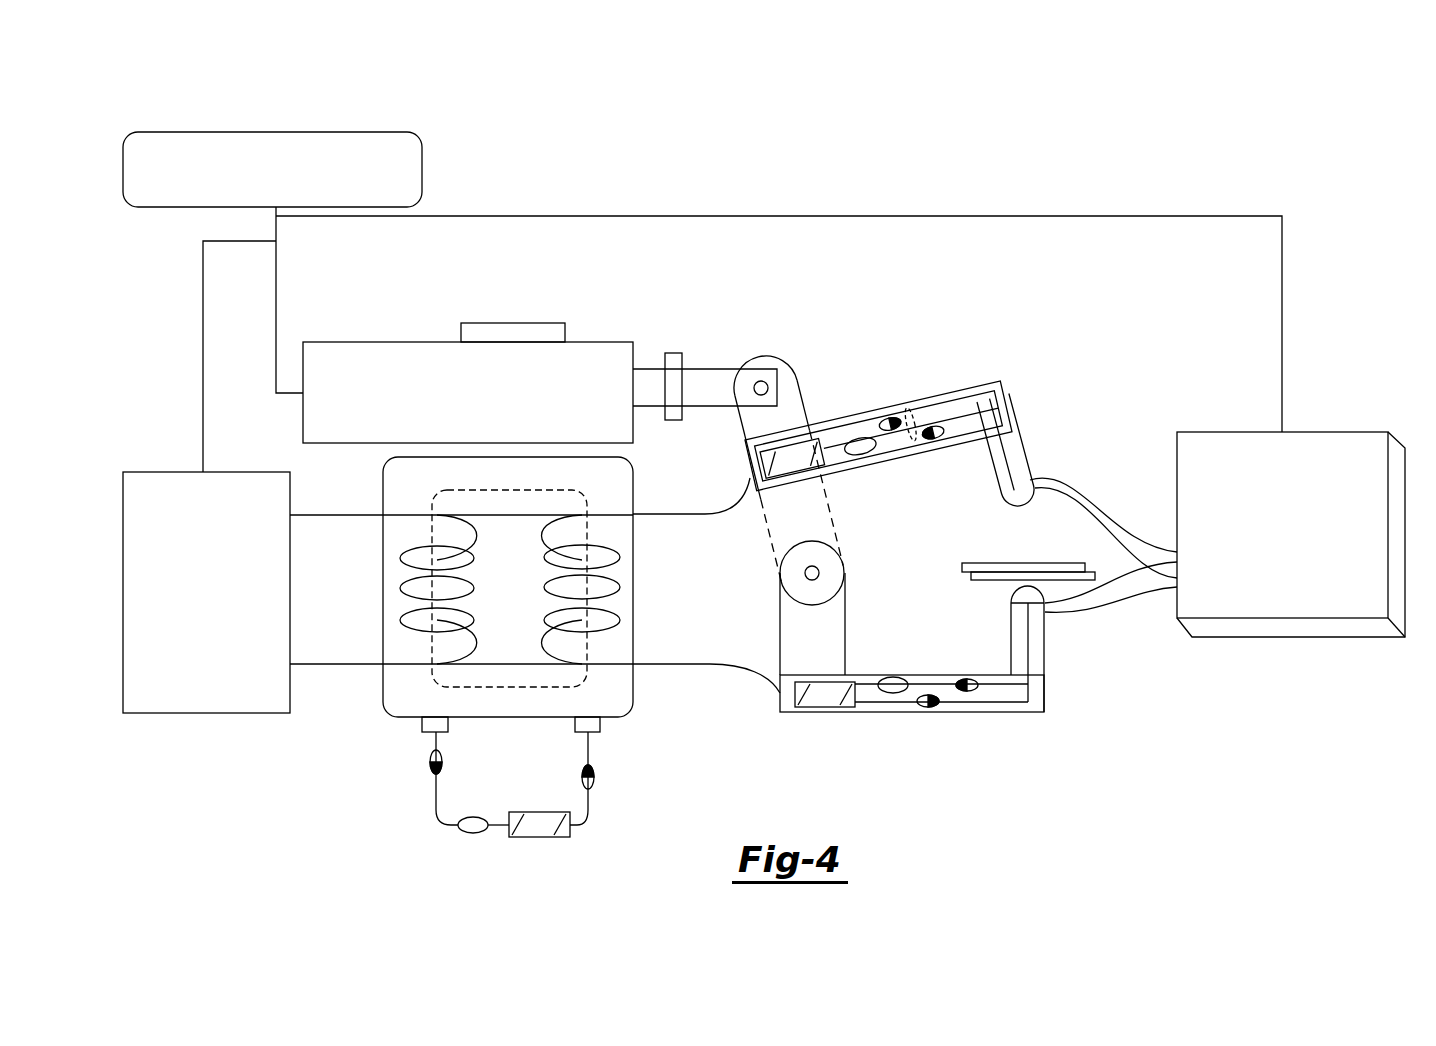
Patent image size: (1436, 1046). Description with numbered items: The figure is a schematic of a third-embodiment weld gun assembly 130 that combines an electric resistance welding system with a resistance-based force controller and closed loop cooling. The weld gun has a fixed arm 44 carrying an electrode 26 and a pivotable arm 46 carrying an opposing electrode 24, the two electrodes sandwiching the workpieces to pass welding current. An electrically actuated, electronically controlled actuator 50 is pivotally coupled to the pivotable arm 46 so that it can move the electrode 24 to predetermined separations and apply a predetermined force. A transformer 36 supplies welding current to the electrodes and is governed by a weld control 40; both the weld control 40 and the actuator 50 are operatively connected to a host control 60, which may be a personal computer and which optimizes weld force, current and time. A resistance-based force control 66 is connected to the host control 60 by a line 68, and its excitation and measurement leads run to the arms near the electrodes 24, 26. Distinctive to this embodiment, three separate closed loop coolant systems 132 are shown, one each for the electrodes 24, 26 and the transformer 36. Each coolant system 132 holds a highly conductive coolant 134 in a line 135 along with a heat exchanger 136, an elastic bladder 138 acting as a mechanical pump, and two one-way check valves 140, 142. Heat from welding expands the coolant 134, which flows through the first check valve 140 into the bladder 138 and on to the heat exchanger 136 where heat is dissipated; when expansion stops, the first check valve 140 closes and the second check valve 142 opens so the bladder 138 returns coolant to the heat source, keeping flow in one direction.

The electrode 24 is at (1012, 440).
The electrode 26 is at (1044, 630).
The transformer 36 is at (637, 545).
The weld control 40 is at (220, 713).
The fixed arm 44 is at (778, 622).
The pivotable arm 46 is at (745, 452).
The actuator 50 is at (429, 343).
The host control 60 is at (383, 132).
The resistance-based force control 66 is at (1373, 432).
The line 68 is at (887, 216).
The weld gun assembly 130 is at (742, 161).
The closed loop coolant system 132 is at (715, 594).
The coolant 134 is at (909, 408).
The line 135 is at (1005, 385).
The heat exchanger 136 is at (825, 442).
The elastic bladder 138 is at (865, 458).
The check valve 140 is at (938, 440).
The check valve 142 is at (885, 420).